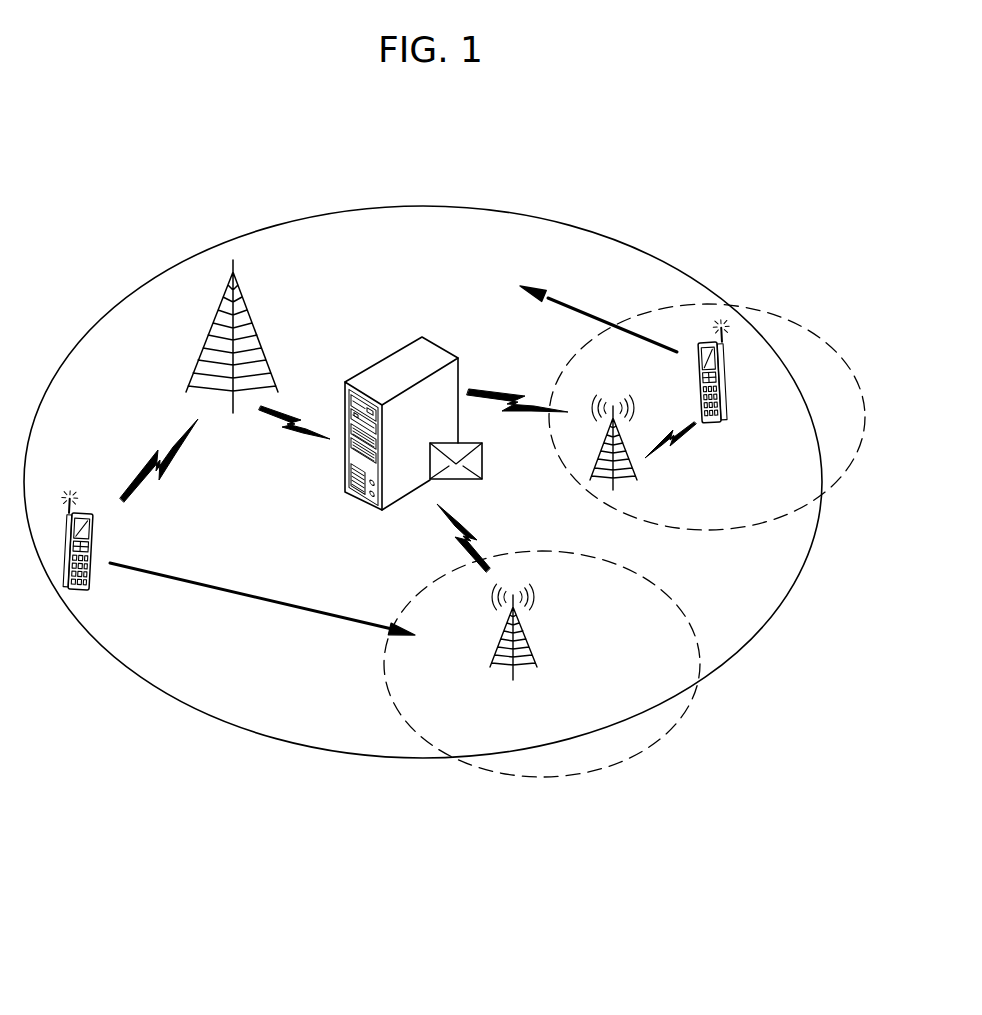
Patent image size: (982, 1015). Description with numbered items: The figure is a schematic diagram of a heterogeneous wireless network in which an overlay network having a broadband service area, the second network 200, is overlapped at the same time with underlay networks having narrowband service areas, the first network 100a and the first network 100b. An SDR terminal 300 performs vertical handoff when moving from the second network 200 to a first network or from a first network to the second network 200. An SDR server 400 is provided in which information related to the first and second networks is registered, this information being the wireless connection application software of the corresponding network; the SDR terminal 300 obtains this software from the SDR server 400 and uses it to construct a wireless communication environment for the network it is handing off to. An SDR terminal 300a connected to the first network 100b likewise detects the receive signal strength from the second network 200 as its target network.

The second network 200 is at (657, 257).
The SDR server 400 is at (400, 348).
The SDR terminal 300 is at (87, 603).
The SDR terminal 300a is at (740, 370).
The first network 100a is at (760, 528).
The first network 100b is at (570, 777).